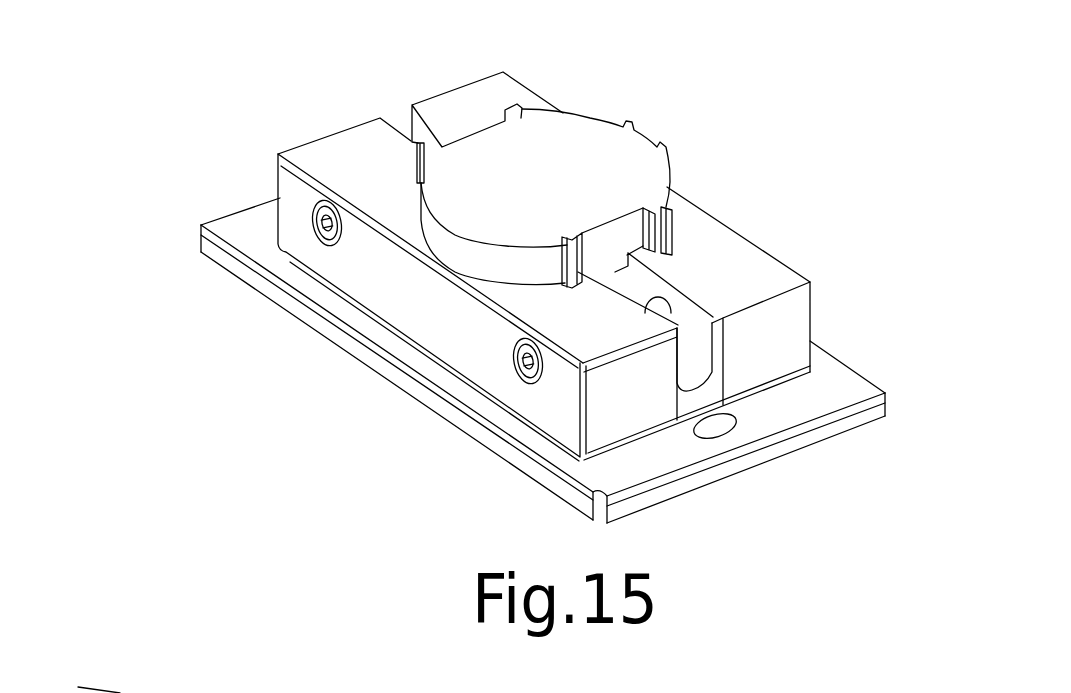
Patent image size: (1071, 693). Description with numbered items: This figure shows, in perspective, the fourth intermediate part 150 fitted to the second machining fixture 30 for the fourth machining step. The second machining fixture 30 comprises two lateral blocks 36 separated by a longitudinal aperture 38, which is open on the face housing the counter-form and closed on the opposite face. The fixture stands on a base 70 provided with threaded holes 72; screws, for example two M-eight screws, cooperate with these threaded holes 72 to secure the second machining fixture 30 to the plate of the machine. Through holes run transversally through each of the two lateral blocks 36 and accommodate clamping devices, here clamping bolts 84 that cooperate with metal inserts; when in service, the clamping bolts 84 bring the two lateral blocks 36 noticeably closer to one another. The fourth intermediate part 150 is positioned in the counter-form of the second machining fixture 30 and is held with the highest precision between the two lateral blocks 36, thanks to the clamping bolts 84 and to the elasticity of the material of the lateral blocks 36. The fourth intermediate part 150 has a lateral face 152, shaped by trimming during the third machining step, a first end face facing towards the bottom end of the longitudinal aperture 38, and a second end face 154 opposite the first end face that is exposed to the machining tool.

The second machining fixture 30 is at (185, 157).
The lateral blocks 36 is at (793, 319).
The longitudinal aperture 38 is at (413, 124).
The base 70 is at (828, 381).
The threaded holes 72 is at (725, 430).
The clamping bolts 84 is at (316, 233).
The fourth intermediate part 150 is at (695, 165).
The lateral face 152 is at (468, 238).
The second end face 154 is at (570, 175).